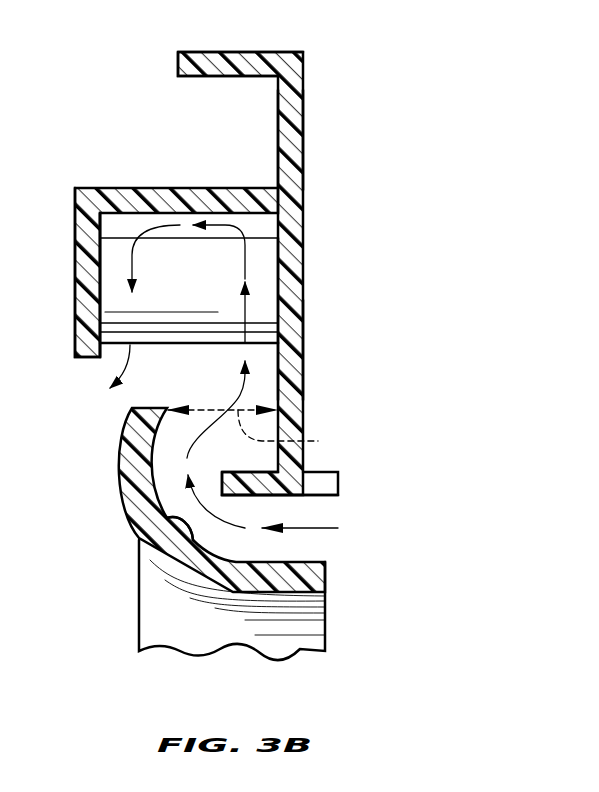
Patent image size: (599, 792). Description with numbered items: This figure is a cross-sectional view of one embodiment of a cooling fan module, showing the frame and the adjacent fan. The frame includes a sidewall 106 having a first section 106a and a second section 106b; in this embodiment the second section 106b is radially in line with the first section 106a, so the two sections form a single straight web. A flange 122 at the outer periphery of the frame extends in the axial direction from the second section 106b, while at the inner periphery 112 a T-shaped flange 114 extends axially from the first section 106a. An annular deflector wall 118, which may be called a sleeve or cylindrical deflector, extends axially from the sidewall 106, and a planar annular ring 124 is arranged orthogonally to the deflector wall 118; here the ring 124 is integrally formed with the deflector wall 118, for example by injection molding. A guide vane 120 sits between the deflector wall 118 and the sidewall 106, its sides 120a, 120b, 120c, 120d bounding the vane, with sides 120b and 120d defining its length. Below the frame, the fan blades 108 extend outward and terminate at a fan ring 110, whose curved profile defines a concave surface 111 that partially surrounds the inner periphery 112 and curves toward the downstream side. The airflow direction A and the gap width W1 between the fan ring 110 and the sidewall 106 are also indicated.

The sidewall 106 is at (303, 90).
The first section 106a is at (303, 350).
The second section 106b is at (303, 188).
The fan blades 108 is at (173, 607).
The fan ring 110 is at (120, 493).
The concave surface 111 is at (180, 520).
The inner periphery 112 is at (282, 496).
The T-shaped flange 114 is at (310, 498).
The annular deflector wall 118 is at (145, 188).
The guide vane 120 is at (115, 355).
The side of guide vane 120a is at (303, 282).
The side of guide vane 120b is at (128, 237).
The side of guide vane 120c is at (100, 300).
The side of guide vane 120d is at (232, 345).
The flange 122 is at (255, 52).
The planar annular ring 124 is at (75, 268).
The airflow direction A is at (325, 528).
The gap width W1 is at (265, 435).